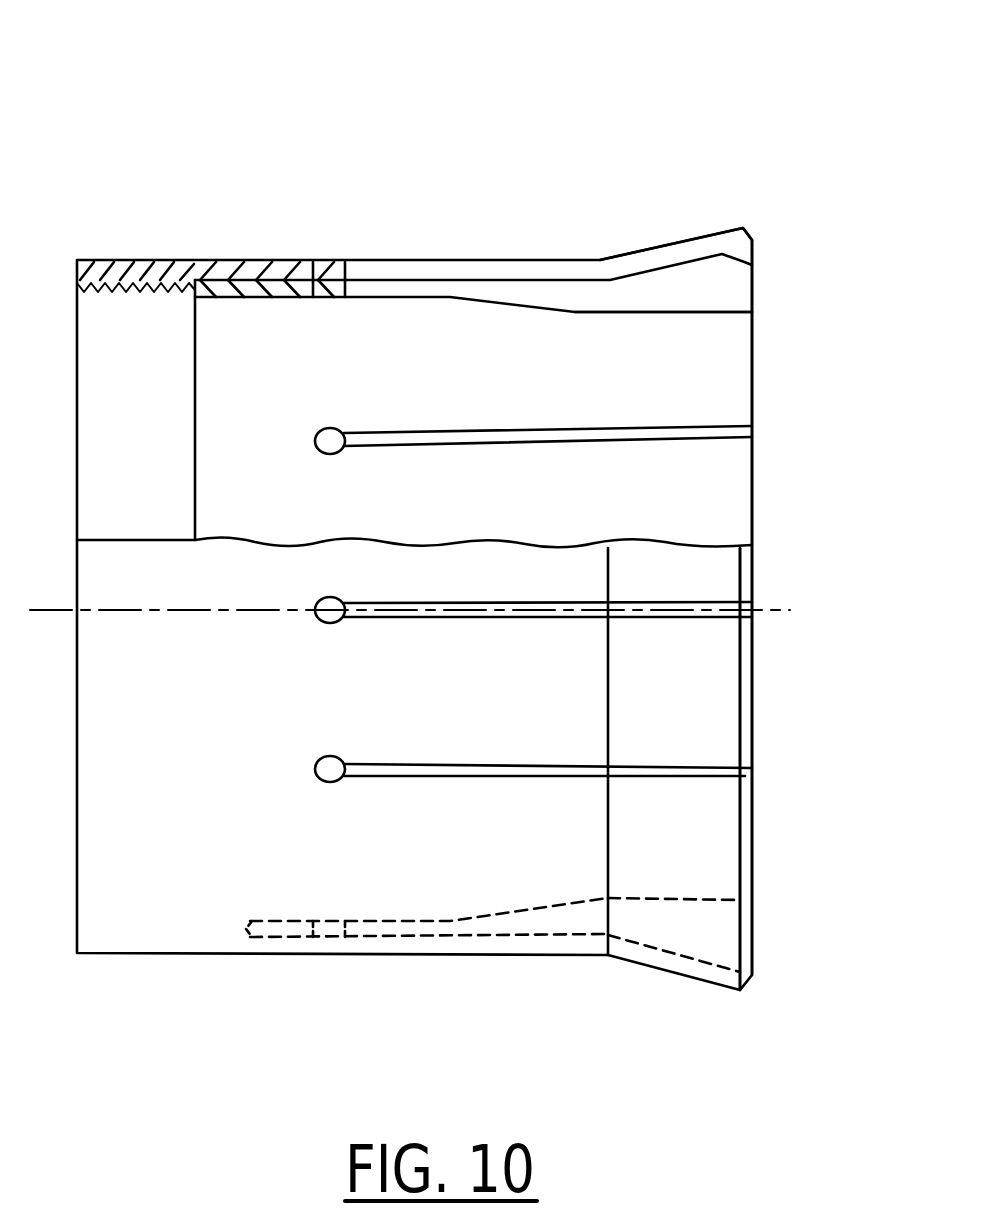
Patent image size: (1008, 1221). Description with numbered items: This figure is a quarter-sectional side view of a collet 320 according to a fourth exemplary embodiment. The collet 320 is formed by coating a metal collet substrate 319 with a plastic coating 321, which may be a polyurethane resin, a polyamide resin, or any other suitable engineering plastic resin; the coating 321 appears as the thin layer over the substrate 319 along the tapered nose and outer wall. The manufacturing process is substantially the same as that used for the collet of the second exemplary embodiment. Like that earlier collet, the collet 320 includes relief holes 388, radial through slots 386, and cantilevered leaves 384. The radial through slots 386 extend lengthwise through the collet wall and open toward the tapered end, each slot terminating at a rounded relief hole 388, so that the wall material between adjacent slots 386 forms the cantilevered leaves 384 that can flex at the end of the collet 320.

The collet 320 is at (752, 108).
The metal collet substrate 319 is at (755, 228).
The plastic coating 321 is at (755, 292).
The cantilevered leaves 384 is at (718, 252).
The radial through slots 386 is at (534, 620).
The relief holes 388 is at (320, 268).